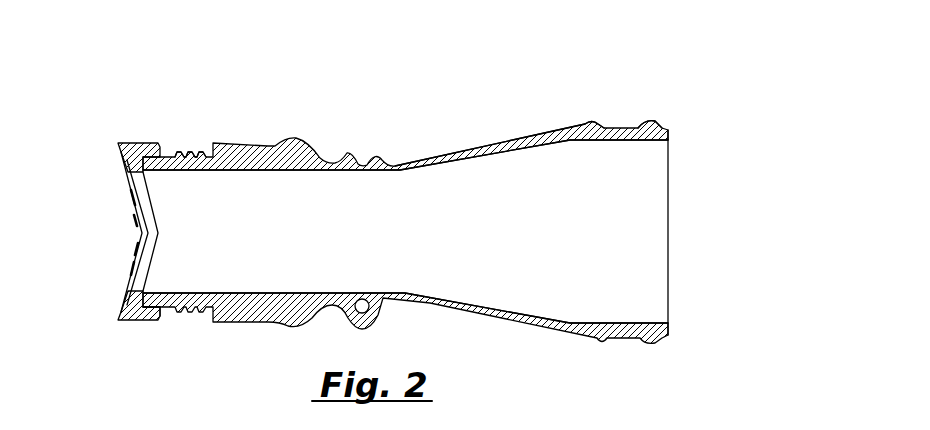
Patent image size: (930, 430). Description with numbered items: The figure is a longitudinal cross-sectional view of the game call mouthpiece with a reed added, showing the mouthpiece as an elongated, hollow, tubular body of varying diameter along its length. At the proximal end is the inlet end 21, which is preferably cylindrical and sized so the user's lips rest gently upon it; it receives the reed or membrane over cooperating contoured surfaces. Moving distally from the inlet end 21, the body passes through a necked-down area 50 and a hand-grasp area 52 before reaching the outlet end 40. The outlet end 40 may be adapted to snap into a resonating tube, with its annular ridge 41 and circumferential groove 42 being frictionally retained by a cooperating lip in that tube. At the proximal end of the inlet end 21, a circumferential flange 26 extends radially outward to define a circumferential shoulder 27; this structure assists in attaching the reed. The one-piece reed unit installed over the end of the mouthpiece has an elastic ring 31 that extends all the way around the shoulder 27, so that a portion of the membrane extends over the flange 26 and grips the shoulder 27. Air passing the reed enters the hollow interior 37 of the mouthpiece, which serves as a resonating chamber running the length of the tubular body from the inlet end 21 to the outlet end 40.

The inlet end 21 is at (118, 261).
The circumferential flange 26 is at (141, 318).
The circumferential shoulder 27 is at (152, 308).
The elastic ring 31 is at (125, 149).
The hollow interior 37 is at (468, 235).
The outlet end 40 is at (684, 168).
The annular ridge 41 is at (656, 122).
The circumferential groove 42 is at (618, 125).
The necked-down area 50 is at (188, 142).
The hand-grasp area 52 is at (468, 140).